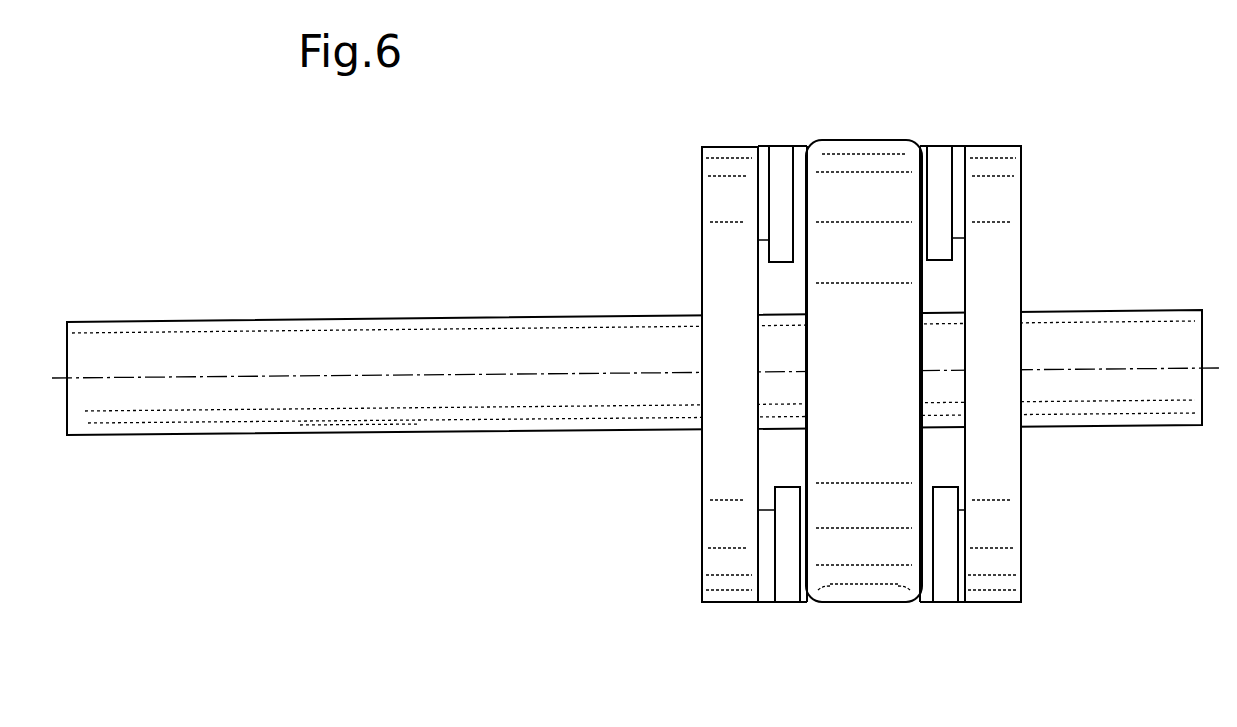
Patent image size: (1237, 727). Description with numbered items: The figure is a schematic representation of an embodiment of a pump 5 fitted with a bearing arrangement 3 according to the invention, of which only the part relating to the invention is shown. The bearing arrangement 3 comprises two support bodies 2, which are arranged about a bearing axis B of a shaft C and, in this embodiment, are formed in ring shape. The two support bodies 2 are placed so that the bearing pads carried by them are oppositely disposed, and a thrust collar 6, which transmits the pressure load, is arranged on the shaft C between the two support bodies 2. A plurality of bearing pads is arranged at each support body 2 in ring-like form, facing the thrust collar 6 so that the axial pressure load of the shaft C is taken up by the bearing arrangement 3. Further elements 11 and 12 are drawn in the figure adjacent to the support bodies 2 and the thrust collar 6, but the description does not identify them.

The support body 2 is at (720, 473).
The bearing arrangement 3 is at (876, 361).
The pump 5 is at (213, 186).
The thrust collar 6 is at (857, 568).
The spring element 11 is at (780, 170).
The spacer ring 12 is at (765, 152).
The bearing axis B is at (82, 378).
The shaft C is at (341, 414).